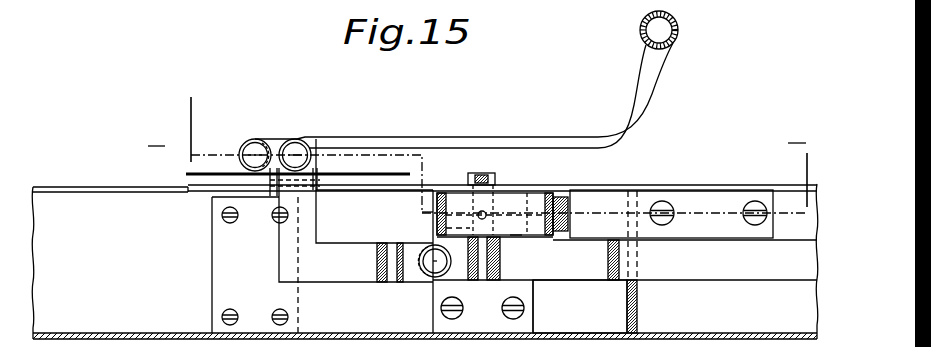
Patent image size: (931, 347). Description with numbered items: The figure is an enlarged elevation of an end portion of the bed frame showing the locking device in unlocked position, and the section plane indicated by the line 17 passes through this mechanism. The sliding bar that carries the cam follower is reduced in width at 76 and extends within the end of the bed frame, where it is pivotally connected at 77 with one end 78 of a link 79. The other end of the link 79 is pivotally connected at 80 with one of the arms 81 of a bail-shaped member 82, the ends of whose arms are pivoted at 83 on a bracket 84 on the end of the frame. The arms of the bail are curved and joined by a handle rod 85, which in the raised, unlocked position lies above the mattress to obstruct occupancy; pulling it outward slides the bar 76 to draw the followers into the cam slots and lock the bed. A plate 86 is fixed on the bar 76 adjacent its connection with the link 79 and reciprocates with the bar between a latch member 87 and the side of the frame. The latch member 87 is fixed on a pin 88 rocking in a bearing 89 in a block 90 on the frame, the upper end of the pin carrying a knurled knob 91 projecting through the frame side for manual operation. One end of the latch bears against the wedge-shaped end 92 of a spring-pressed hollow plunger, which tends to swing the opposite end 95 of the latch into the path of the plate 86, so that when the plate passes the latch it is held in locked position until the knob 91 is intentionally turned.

The section line 17 is at (480, 155).
The reduced-width portion of bar 76 is at (710, 272).
The pivot connection 77 is at (432, 268).
The end of link 78 is at (369, 273).
The link 79 is at (326, 232).
The pivot connection 80 is at (310, 137).
The arm of bail-shaped member 81 is at (417, 138).
The bail-shaped member 82 is at (531, 126).
The pivot 83 is at (257, 146).
The bracket 84 is at (245, 180).
The handle rod 85 is at (677, 31).
The plate 86 is at (440, 193).
The latch member 87 is at (517, 231).
The pin 88 is at (437, 228).
The bearing 89 is at (500, 268).
The block 90 is at (537, 307).
The knurled knob 91 is at (500, 175).
The wedge-shaped end of plunger 92 is at (572, 206).
The end of latch member 95 is at (422, 210).